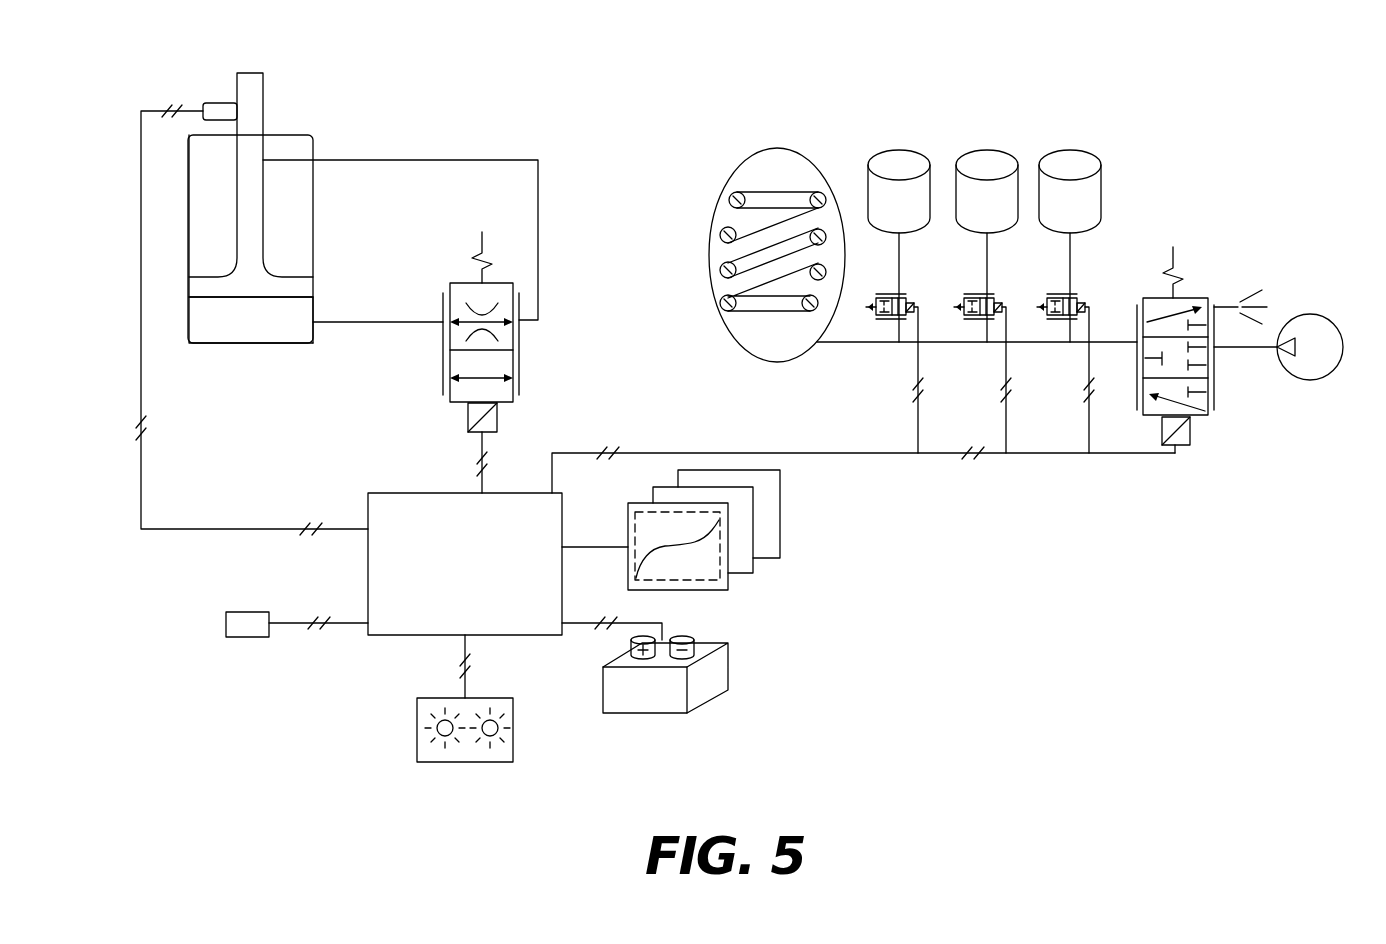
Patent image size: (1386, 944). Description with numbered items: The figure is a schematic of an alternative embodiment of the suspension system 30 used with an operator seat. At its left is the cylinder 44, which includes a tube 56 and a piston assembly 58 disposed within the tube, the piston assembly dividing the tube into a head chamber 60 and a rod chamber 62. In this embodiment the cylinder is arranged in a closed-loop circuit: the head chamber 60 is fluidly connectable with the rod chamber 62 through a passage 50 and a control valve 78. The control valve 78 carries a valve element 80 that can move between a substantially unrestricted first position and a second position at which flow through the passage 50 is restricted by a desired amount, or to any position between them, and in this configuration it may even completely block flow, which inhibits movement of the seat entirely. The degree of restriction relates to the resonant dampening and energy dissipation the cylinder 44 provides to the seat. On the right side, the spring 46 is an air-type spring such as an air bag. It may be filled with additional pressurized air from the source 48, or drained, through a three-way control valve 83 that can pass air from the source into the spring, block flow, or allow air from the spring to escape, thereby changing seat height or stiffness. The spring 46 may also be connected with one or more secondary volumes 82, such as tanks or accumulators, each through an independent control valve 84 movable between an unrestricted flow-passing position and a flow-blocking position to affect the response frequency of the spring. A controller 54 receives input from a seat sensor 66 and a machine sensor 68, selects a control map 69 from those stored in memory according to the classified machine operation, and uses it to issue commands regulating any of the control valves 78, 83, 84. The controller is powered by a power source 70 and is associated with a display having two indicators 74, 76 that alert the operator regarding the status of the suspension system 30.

The suspension system 30 is at (1237, 164).
The cylinder 44 is at (180, 316).
The spring 46 is at (730, 173).
The source 48 is at (1328, 359).
The passage 50 is at (408, 320).
The controller 54 is at (477, 574).
The tube 56 is at (308, 333).
The piston assembly 58 is at (302, 287).
The head chamber 60 is at (263, 332).
The rod chamber 62 is at (303, 203).
The seat sensor 66 is at (216, 112).
The machine sensor 68 is at (253, 637).
The control map 69 is at (780, 512).
The power source 70 is at (657, 707).
The indicator 74 is at (438, 748).
The indicator 76 is at (479, 750).
The control valve 78 is at (576, 258).
The valve element 80 is at (505, 402).
The secondary volume 82 is at (910, 216).
The control valve 83 is at (1236, 282).
The control valve 84 is at (902, 297).